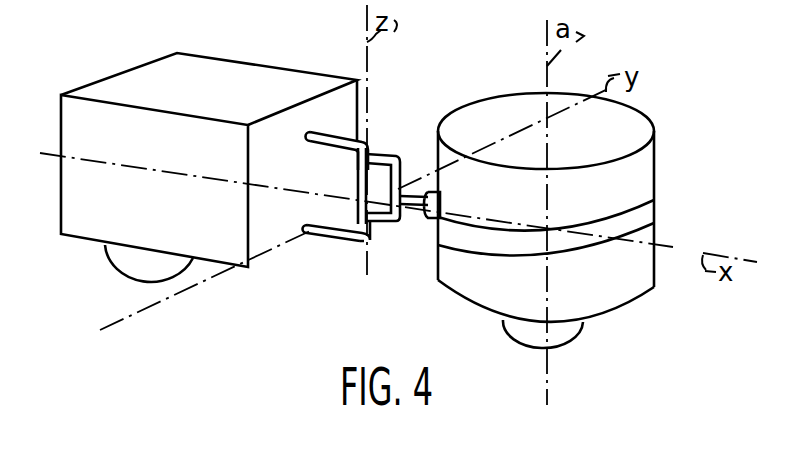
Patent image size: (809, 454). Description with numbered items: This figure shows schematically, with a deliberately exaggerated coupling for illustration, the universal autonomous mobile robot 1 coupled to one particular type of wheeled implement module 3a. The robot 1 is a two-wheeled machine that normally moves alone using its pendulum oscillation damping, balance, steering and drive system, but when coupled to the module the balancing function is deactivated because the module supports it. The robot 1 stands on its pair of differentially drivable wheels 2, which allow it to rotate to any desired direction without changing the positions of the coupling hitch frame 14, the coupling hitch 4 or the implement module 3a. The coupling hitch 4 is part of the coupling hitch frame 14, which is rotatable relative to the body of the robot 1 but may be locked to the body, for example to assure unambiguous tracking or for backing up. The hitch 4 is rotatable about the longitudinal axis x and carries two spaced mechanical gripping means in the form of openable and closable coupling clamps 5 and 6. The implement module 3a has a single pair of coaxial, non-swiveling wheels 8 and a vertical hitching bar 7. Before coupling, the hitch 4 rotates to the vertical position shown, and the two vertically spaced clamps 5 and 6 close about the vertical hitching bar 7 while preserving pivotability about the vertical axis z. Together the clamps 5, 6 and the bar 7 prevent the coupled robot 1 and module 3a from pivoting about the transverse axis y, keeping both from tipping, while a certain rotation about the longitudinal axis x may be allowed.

The autonomous mobile robot 1 is at (654, 150).
The differentially drivable wheels 2 is at (512, 322).
The wheeled implement module 3a is at (114, 144).
The coupling hitch 4 is at (398, 223).
The coupling clamp 5 is at (352, 222).
The coupling clamp 6 is at (376, 156).
The vertical hitching bar 7 is at (311, 138).
The coaxial wheels 8 is at (118, 258).
The coupling hitch frame 14 is at (647, 216).